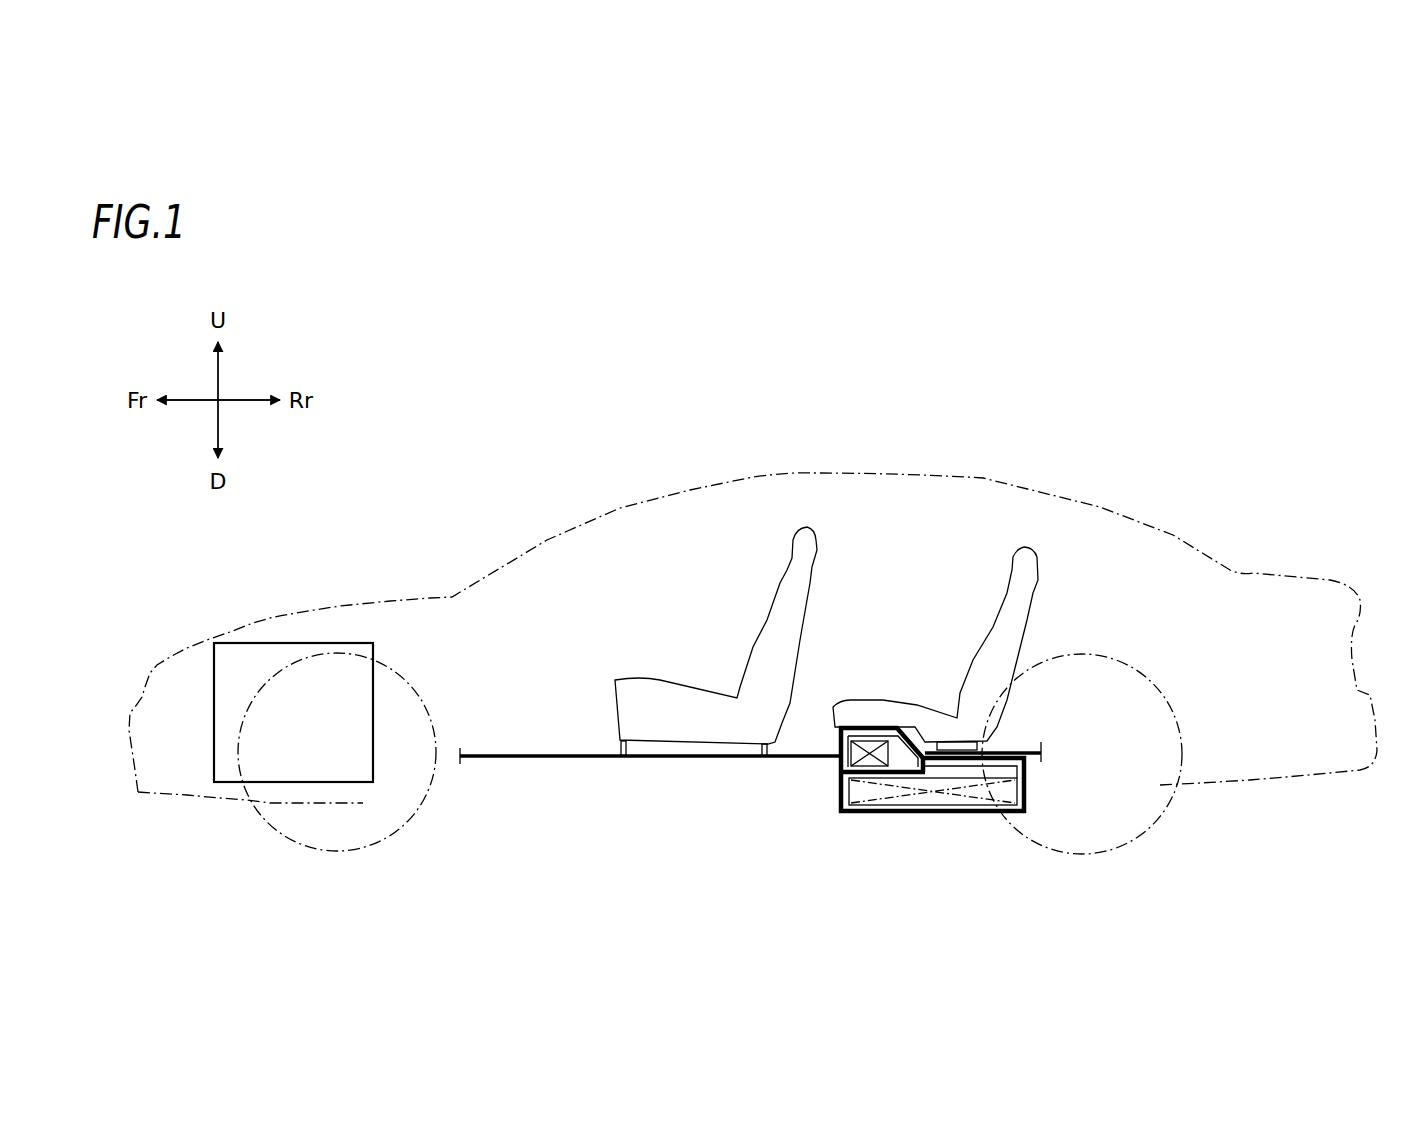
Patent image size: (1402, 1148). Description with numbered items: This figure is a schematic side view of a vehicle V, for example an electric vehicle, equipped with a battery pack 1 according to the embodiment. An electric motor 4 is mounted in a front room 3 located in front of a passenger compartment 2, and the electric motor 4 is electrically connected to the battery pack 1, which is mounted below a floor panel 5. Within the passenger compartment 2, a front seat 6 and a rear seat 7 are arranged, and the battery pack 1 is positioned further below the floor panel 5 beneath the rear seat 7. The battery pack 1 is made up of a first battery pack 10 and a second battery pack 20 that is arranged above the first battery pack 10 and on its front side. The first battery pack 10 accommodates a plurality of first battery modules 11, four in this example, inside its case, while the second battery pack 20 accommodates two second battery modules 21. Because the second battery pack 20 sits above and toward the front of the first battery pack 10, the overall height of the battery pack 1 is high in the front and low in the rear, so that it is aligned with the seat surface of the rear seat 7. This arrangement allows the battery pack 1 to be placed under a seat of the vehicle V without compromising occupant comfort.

The vehicle V is at (939, 416).
The battery pack 1 is at (892, 777).
The passenger compartment 2 is at (885, 519).
The front room 3 is at (181, 686).
The electric motor 4 is at (283, 655).
The floor panel 5 is at (801, 753).
The front seat 6 is at (753, 625).
The rear seat 7 is at (978, 625).
The first battery pack 10 is at (902, 818).
The first battery module 11 is at (862, 814).
The second battery pack 20 is at (890, 724).
The second battery module 21 is at (871, 724).